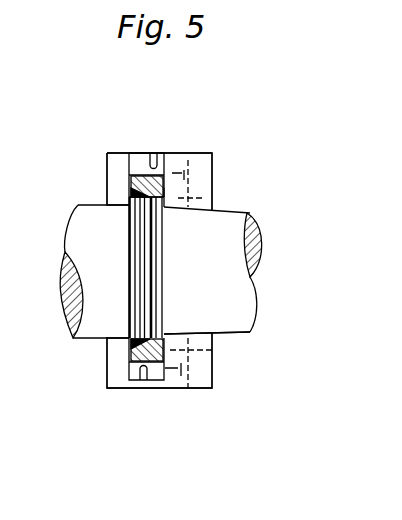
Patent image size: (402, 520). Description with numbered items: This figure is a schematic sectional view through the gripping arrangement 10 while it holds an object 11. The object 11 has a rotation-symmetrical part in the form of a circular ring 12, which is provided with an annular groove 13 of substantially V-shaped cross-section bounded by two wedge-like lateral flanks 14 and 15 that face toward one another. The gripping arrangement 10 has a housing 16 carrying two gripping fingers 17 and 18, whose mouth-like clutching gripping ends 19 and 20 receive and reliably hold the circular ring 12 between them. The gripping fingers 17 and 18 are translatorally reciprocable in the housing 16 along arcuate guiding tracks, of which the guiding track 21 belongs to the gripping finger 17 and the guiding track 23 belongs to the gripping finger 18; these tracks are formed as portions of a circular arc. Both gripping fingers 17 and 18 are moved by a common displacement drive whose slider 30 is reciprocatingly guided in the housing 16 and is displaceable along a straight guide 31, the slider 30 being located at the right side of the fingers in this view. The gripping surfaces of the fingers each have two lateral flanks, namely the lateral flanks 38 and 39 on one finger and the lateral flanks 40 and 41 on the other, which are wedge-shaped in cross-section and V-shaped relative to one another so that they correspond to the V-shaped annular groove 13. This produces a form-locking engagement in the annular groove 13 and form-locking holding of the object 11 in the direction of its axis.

The gripping arrangement 10 is at (236, 161).
The object 11 is at (258, 243).
The circular ring 12 is at (165, 262).
The annular groove 13 is at (147, 233).
The lateral flank 14 is at (137, 252).
The lateral flank 15 is at (157, 295).
The housing 16 is at (204, 168).
The gripping finger 17 is at (140, 180).
The gripping finger 18 is at (128, 388).
The gripping end 19 is at (133, 178).
The gripping end 20 is at (130, 363).
The guiding track 21 is at (153, 170).
The guiding track 23 is at (145, 380).
The slider 30 is at (166, 200).
The straight guide 31 is at (190, 162).
The lateral flank 38 is at (131, 197).
The lateral flank 39 is at (168, 193).
The lateral flank 40 is at (128, 348).
The lateral flank 41 is at (208, 350).